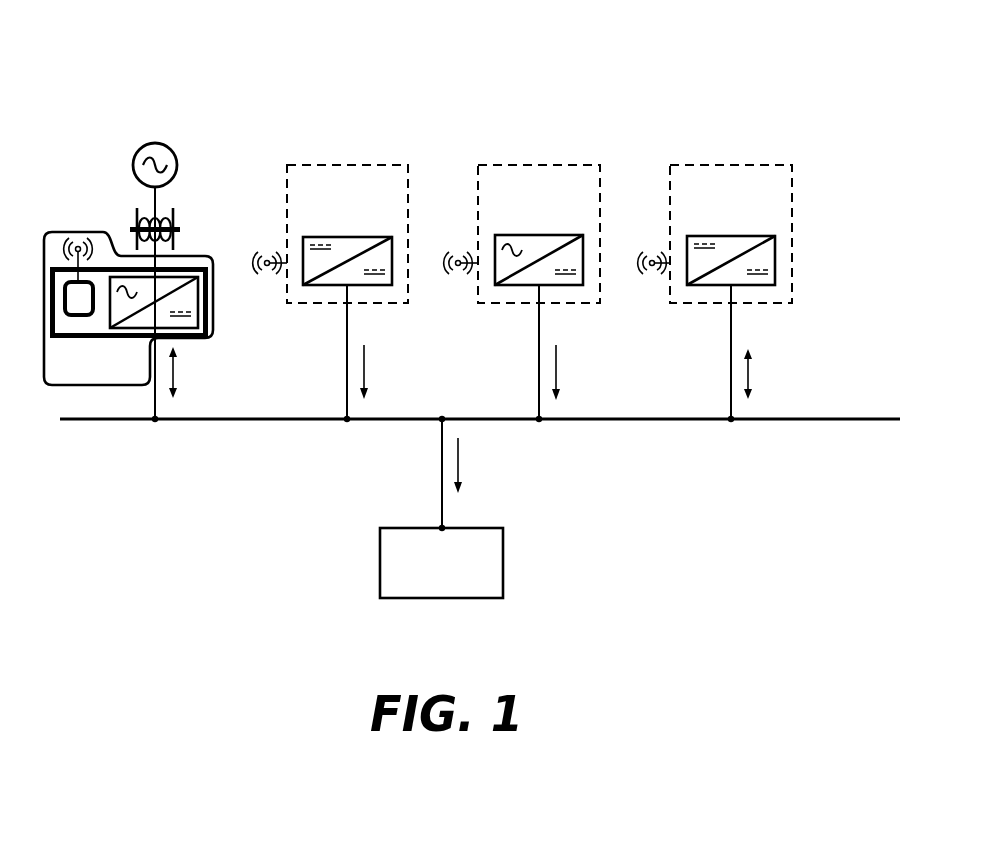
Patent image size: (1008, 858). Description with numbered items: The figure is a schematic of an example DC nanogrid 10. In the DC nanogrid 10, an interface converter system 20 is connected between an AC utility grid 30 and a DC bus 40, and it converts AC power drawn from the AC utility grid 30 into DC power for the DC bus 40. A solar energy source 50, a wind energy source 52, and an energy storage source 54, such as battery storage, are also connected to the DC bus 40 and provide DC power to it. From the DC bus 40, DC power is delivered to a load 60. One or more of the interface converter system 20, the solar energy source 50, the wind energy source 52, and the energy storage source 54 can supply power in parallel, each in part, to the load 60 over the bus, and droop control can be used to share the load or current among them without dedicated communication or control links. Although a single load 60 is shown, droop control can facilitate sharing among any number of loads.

The DC nanogrid 10 is at (664, 50).
The interface converter system 20 is at (62, 237).
The AC utility grid 30 is at (141, 152).
The DC bus 40 is at (818, 419).
The solar energy source 50 is at (405, 168).
The wind energy source 52 is at (597, 168).
The energy storage source 54 is at (790, 168).
The load 60 is at (503, 580).